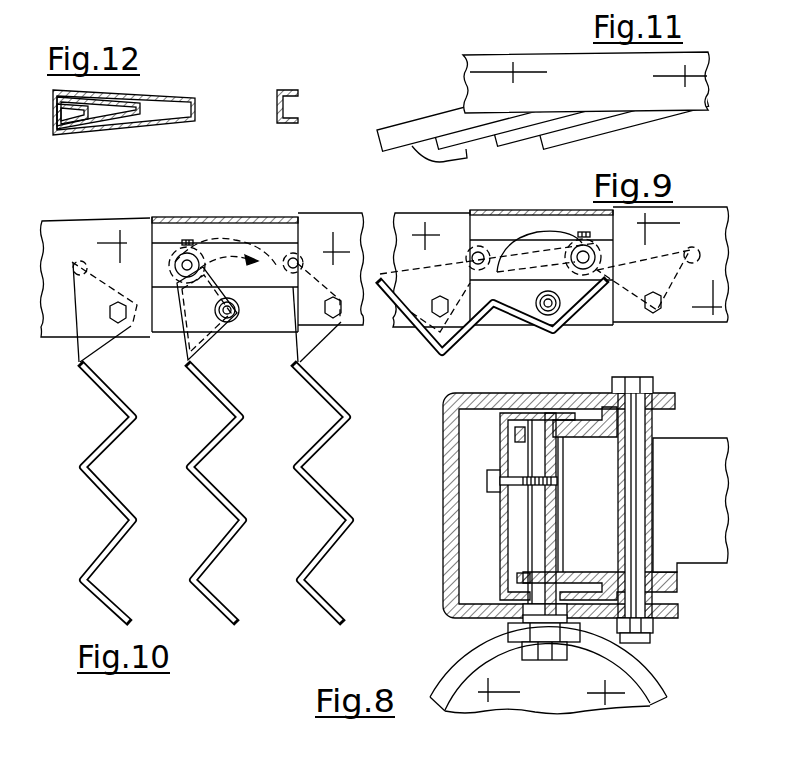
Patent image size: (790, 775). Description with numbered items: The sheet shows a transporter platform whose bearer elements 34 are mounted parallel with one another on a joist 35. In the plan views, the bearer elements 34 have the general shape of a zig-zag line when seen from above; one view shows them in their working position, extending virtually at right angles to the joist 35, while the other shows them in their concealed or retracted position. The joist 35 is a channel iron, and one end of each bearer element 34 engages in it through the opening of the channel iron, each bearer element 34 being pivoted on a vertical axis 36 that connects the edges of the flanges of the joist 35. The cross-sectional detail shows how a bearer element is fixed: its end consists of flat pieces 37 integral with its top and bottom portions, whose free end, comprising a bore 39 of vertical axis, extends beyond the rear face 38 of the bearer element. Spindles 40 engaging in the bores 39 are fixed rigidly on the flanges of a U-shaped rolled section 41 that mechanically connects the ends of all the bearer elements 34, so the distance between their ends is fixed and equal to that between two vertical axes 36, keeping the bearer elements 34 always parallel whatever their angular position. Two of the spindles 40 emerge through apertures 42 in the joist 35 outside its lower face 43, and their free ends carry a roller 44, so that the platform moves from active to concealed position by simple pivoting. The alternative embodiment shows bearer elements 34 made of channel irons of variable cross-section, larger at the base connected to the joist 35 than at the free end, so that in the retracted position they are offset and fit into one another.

In FIG. 12, the bearer element 34 is at (119, 128).
In FIG. 11, the bearer element 34 is at (468, 146).
In FIG. 9, the bearer element 34 is at (455, 352).
In FIG. 10, the bearer element 34 is at (110, 484).
In FIG. 8, the bearer element 34 is at (691, 505).
In FIG. 11, the joist 35 is at (586, 82).
In FIG. 9, the joist 35 is at (423, 217).
In FIG. 10, the joist 35 is at (88, 223).
In FIG. 8, the joist 35 is at (448, 546).
In FIG. 9, the vertical axis 36 is at (574, 314).
In FIG. 10, the vertical axis 36 is at (233, 307).
In FIG. 8, the vertical axis 36 is at (640, 531).
In FIG. 10, the flat pieces 37 is at (290, 340).
In FIG. 8, the flat pieces 37 is at (590, 438).
In FIG. 8, the rear face 38 is at (566, 523).
In FIG. 8, the bore 39 is at (563, 428).
In FIG. 9, the spindle 40 is at (590, 246).
In FIG. 10, the spindle 40 is at (177, 257).
In FIG. 8, the spindle 40 is at (550, 498).
In FIG. 9, the rolled section 41 is at (493, 242).
In FIG. 10, the rolled section 41 is at (273, 243).
In FIG. 8, the rolled section 41 is at (502, 526).
In FIG. 9, the aperture 42 is at (545, 232).
In FIG. 10, the aperture 42 is at (220, 240).
In FIG. 8, the aperture 42 is at (497, 621).
In FIG. 8, the lower face 43 is at (593, 632).
In FIG. 8, the roller 44 is at (517, 640).